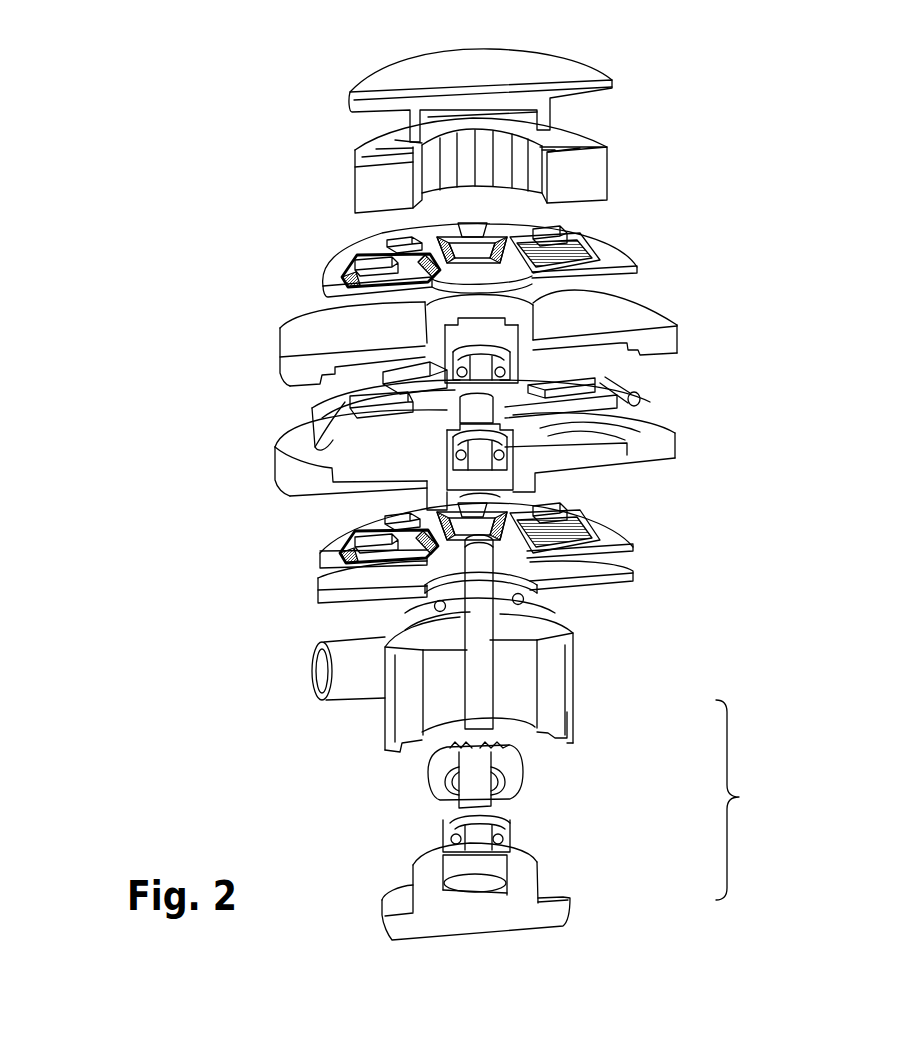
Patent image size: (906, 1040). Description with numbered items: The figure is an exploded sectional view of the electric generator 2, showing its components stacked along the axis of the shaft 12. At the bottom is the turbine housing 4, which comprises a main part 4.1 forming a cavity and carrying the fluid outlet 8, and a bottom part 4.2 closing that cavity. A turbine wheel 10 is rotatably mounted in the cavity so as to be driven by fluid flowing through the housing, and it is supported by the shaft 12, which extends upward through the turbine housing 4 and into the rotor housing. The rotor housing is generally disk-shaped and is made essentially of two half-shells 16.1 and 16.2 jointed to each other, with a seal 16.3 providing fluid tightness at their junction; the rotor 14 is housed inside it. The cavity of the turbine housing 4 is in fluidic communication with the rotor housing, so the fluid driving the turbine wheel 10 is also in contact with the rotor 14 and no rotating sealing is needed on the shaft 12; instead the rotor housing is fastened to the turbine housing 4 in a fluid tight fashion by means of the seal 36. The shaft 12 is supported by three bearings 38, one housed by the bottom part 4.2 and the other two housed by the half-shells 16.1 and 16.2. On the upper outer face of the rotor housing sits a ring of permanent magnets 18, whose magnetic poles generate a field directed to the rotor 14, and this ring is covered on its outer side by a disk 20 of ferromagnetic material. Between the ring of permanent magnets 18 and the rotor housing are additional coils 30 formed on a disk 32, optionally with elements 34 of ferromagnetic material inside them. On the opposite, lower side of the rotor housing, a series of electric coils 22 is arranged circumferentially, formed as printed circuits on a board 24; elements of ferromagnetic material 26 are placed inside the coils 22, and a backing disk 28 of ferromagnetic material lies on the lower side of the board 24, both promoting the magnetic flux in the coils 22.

The electric generator 2 is at (170, 166).
The disk 20 is at (378, 82).
The ring of permanent magnets 18 is at (368, 188).
The disk 32 is at (476, 260).
The additional coils 30 is at (372, 288).
The elements of ferromagnetic material 34 is at (410, 243).
The half-shell 16.1 is at (298, 348).
The bearings 38 is at (455, 348).
The rotor 14 is at (287, 441).
The seal 16.3 is at (641, 396).
The half-shell 16.2 is at (653, 450).
The board 24 is at (483, 546).
The electric coils 22 is at (360, 555).
The elements of ferromagnetic material 26 is at (388, 510).
The disk 28 is at (330, 593).
The seal 36 is at (560, 598).
The shaft 12 is at (483, 621).
The fluid outlet 8 is at (345, 672).
The turbine housing 4 is at (571, 776).
The main part 4.1 is at (560, 697).
The bottom part 4.2 is at (553, 908).
The turbine wheel 10 is at (440, 772).